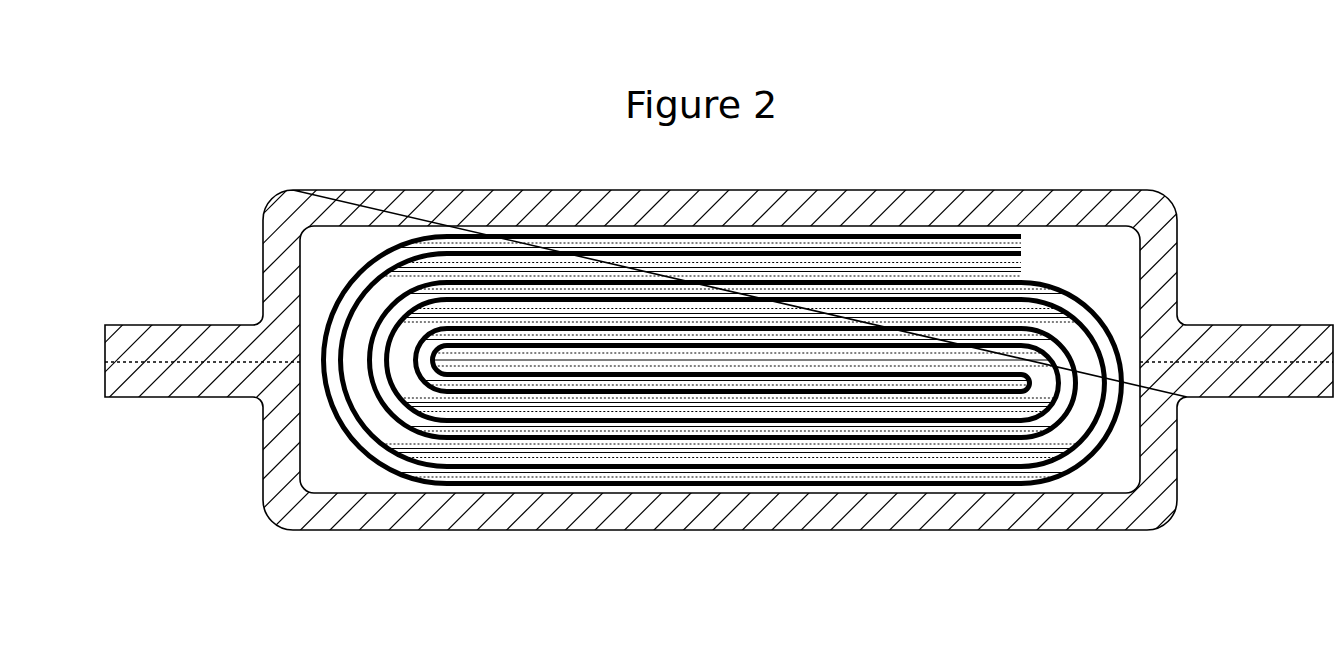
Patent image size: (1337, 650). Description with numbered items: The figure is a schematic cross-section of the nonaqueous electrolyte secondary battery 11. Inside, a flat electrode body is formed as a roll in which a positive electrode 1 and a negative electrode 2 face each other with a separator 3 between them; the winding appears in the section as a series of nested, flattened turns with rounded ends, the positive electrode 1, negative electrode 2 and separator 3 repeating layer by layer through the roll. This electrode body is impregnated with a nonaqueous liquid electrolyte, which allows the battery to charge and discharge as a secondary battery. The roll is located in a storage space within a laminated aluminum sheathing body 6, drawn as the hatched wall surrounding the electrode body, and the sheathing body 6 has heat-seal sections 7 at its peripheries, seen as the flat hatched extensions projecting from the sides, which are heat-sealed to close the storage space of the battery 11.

The positive electrode 1 is at (995, 270).
The negative electrode 2 is at (1022, 244).
The separator 3 is at (951, 234).
The laminated aluminum sheathing body 6 is at (1153, 188).
The heat-seal section 7 is at (1259, 324).
The nonaqueous electrolyte secondary battery 11 is at (668, 286).